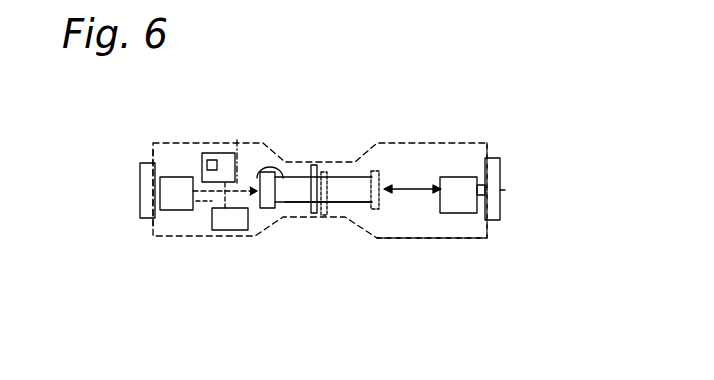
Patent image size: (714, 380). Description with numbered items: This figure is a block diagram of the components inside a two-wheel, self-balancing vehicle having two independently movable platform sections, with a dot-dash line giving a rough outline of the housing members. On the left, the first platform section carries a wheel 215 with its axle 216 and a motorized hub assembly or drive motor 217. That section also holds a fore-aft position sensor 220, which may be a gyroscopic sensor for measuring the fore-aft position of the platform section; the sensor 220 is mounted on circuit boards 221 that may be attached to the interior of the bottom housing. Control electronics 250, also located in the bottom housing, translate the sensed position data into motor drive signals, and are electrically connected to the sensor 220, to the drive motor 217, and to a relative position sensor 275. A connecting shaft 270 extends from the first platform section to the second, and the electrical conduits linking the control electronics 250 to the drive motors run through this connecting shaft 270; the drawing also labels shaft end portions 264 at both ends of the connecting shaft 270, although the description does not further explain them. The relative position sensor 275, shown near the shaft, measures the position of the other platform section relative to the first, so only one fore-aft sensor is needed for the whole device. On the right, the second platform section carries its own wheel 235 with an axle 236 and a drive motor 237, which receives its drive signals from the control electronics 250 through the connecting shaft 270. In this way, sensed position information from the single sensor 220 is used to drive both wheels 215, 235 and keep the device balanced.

The wheel 215 is at (142, 213).
The axle 216 is at (160, 189).
The drive motor 217 is at (178, 197).
The fore-aft position sensor 220 is at (214, 160).
The circuit boards 221 is at (237, 140).
The wheel 235 is at (503, 188).
The axle 236 is at (480, 192).
The drive motor 237 is at (455, 200).
The control electronics 250 is at (228, 218).
The shaft end / hook 264 is at (283, 178).
The connecting shaft 270 is at (297, 205).
The relative position sensor 275 is at (331, 175).